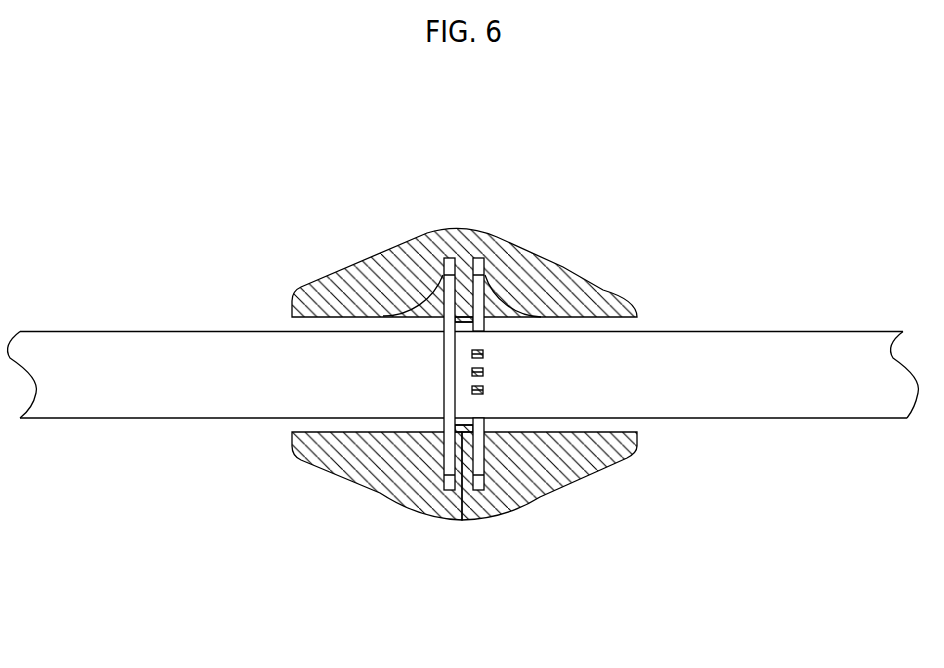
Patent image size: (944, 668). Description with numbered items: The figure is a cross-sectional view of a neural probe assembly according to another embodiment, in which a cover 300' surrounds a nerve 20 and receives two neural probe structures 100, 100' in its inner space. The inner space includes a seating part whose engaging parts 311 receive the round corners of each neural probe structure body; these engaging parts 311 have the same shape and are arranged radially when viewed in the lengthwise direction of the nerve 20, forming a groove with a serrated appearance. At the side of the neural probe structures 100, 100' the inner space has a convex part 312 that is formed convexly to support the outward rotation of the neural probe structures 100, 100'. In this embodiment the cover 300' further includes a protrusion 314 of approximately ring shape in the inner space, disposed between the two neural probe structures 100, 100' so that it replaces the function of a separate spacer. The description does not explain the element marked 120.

The nerve 20 is at (788, 332).
The cover 300' is at (471, 310).
The engaging parts 311 is at (482, 256).
The convex part 312 is at (418, 307).
The protrusion 314 is at (462, 457).
The neural probe structure 100 is at (549, 511).
The neural probe structure 100' is at (377, 511).
The through holes 120 is at (485, 393).